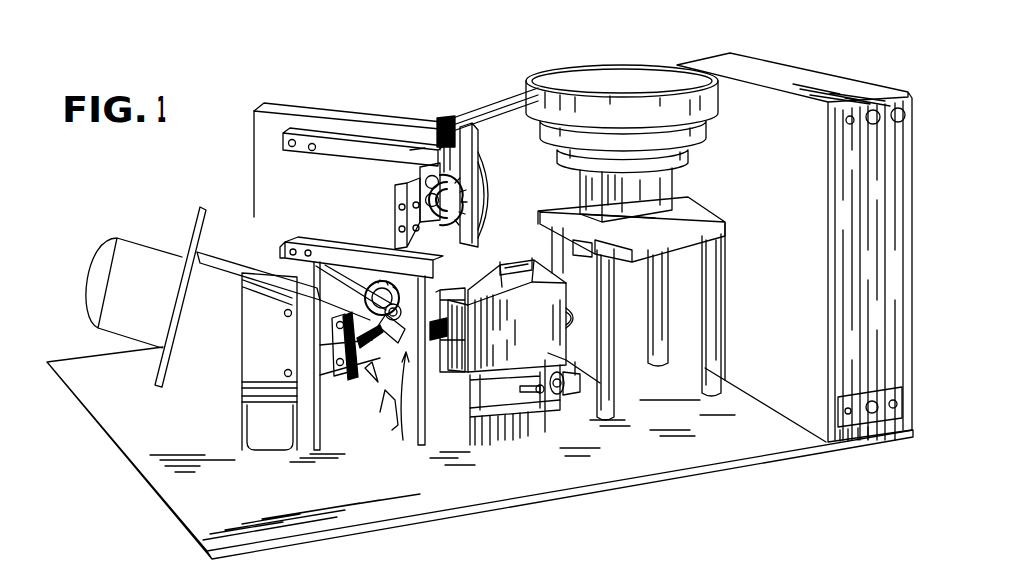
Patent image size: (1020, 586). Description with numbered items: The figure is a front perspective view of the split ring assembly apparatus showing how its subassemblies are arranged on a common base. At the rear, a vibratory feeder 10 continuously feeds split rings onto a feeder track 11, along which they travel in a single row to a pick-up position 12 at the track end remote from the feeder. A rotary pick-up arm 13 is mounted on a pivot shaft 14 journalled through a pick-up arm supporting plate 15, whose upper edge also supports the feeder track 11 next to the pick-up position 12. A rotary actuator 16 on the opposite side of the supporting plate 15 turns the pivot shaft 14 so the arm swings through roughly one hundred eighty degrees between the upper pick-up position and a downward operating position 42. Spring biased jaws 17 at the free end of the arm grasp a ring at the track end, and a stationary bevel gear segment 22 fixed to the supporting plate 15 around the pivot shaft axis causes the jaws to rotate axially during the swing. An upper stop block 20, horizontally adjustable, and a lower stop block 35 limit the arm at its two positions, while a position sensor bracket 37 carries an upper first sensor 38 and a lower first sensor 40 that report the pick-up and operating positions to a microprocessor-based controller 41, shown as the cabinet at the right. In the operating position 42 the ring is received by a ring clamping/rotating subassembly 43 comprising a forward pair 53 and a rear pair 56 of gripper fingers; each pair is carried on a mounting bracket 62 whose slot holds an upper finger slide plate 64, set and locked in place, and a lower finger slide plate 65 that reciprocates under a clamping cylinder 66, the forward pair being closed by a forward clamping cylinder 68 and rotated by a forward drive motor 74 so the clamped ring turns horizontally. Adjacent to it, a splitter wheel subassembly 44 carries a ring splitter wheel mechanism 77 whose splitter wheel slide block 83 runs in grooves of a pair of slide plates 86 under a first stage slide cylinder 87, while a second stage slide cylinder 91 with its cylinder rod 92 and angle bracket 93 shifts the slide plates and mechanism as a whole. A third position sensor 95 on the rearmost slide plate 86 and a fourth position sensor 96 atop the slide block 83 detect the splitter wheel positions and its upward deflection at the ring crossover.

The vibratory feeder 10 is at (628, 72).
The feeder track 11 is at (487, 102).
The pick-up position 12 is at (412, 110).
The rotary pick-up arm 13 is at (413, 155).
The pivot shaft 14 is at (477, 232).
The pick-up arm supporting plate 15 is at (302, 127).
The rotary actuator 16 is at (490, 197).
The spring biased jaws 17 is at (442, 118).
The upper stop block 20 is at (354, 128).
The stationary bevel gear segment 22 is at (470, 200).
The lower stop block 35 is at (318, 243).
The position sensor bracket 37 is at (395, 210).
The upper first sensor 38 is at (402, 193).
The lower first sensor 40 is at (414, 226).
The microprocessor-based controller 41 is at (808, 402).
The operating position 42 is at (410, 440).
The ring clamping/rotating subassembly 43 is at (266, 258).
The splitter wheel subassembly 44 is at (491, 440).
The forward pair of gripper fingers 53 is at (380, 378).
The rear pair of gripper fingers 56 is at (400, 312).
The mounting bracket 62 is at (168, 418).
The upper finger slide plate 64 is at (244, 305).
The lower finger slide plate 65 is at (245, 350).
The clamping cylinder 66 is at (397, 397).
The forward clamping cylinder 68 is at (270, 440).
The forward drive motor 74 is at (150, 252).
The ring splitter wheel mechanism 77 is at (470, 348).
The splitter wheel slide block 83 is at (468, 343).
The slide plates 86 is at (548, 350).
The first stage slide cylinder 87 is at (580, 323).
The second stage slide cylinder 91 is at (563, 387).
The cylinder rod 92 is at (550, 400).
The angle bracket 93 is at (497, 440).
The third position sensor 95 is at (527, 277).
The fourth position sensor 96 is at (476, 294).